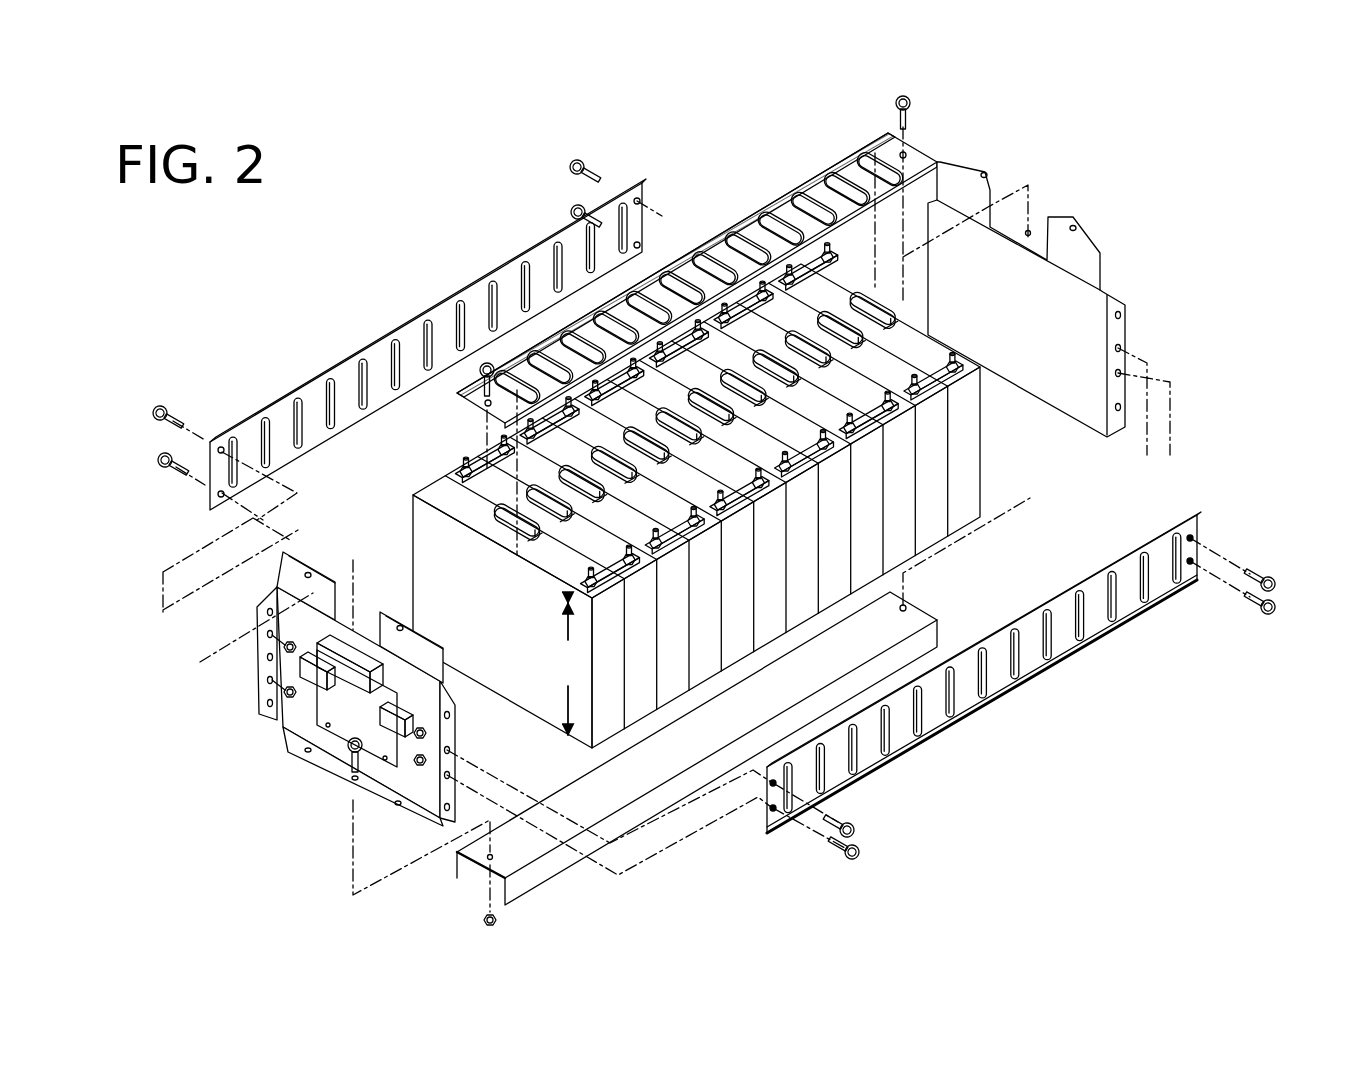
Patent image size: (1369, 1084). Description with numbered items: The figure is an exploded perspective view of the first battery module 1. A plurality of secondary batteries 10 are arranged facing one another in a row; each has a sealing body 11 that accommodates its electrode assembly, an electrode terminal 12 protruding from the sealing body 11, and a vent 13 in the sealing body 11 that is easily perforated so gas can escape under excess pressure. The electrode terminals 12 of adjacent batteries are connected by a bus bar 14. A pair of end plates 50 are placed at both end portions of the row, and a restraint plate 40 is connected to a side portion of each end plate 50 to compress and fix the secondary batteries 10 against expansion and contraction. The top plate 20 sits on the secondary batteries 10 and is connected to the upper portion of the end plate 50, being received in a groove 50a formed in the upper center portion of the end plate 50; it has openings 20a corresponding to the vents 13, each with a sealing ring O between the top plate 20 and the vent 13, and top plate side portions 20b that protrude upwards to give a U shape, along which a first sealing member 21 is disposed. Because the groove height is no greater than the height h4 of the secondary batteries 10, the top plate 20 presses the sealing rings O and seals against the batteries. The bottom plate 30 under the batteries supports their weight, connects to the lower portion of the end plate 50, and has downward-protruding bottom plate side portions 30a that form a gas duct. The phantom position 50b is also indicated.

The first battery module 1 is at (1237, 132).
The secondary battery 10 is at (723, 495).
The sealing body 11 is at (552, 565).
The electrode terminal 12 is at (679, 418).
The vent 13 is at (525, 538).
The bus bar 14 is at (483, 458).
The top plate 20 is at (697, 263).
The opening 20a is at (757, 215).
The top plate side portion 20b is at (931, 160).
The first sealing member 21 is at (853, 150).
The bottom plate 30 is at (801, 531).
The bottom plate side portion 30a is at (540, 877).
The restraint plate 40 is at (415, 330).
The end plate 50 is at (514, 712).
The groove 50a is at (345, 604).
The mounting position 50b is at (290, 586).
The height of the secondary batteries h4 is at (569, 669).
The sealing ring o is at (497, 513).